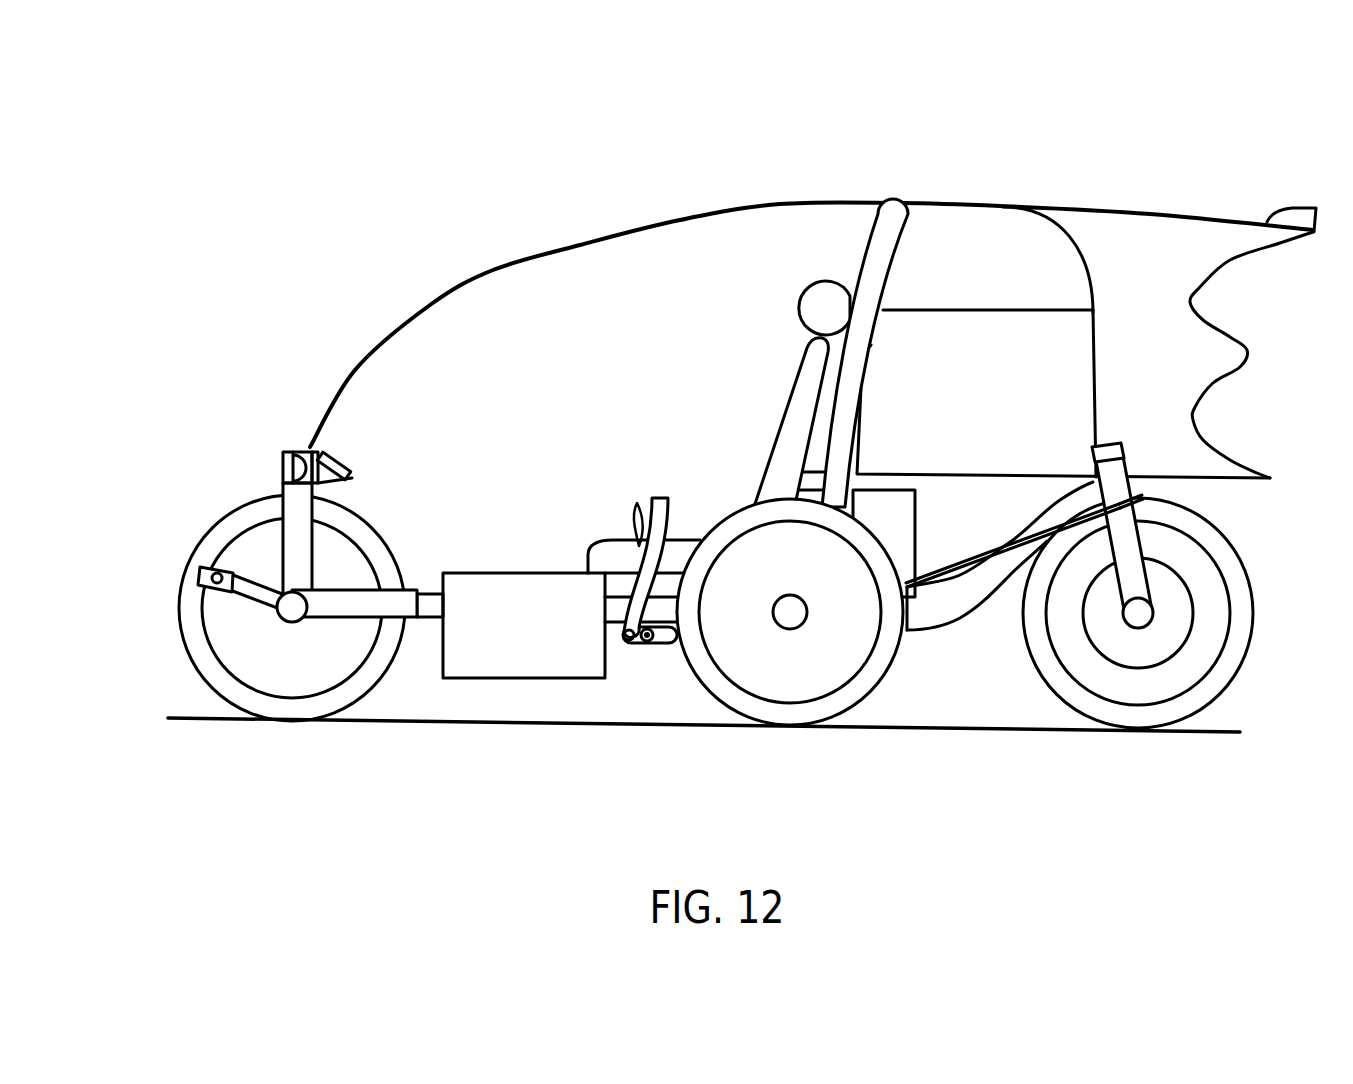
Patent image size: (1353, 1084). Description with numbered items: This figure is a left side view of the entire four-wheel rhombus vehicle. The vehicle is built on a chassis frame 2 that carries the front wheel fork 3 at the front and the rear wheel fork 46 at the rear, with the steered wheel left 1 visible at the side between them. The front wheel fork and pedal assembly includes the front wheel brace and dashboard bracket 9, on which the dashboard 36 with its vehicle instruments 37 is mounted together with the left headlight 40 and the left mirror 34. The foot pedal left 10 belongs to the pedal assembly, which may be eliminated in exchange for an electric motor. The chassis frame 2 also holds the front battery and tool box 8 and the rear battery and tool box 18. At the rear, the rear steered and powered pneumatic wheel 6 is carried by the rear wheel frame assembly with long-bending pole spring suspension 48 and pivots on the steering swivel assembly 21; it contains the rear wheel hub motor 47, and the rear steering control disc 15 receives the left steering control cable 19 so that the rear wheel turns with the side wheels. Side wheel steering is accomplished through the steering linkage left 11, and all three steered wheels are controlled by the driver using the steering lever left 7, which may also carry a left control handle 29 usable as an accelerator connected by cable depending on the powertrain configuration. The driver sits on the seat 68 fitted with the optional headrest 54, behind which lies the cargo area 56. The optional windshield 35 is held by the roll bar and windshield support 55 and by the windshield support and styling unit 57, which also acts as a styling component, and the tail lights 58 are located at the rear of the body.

The steered wheel left 1 is at (775, 720).
The chassis frame 2 is at (430, 590).
The front wheel fork 3 is at (338, 610).
The rear steered and powered pneumatic wheel 6 is at (1052, 693).
The steering lever left 7 is at (675, 492).
The front battery and tool box 8 is at (588, 680).
The front wheel brace and dashboard bracket 9 is at (270, 545).
The foot pedal left 10 is at (200, 571).
The steering linkage left 11 is at (668, 645).
The rear steering control disc 15 is at (1127, 523).
The rear battery and tool box 18 is at (897, 520).
The left steering control cable 19 is at (953, 565).
The steering swivel assembly 21 is at (1123, 455).
The left control handle 29 is at (634, 503).
The left mirror 34 is at (312, 447).
The windshield 35 is at (493, 270).
The dashboard 36 is at (318, 482).
The vehicle instruments 37 is at (340, 460).
The left headlight 40 is at (283, 460).
The rear wheel fork 46 is at (1135, 500).
The rear wheel hub motor 47 is at (1190, 623).
The rear wheel frame assembly with long-bending pole spring suspension 48 is at (978, 590).
The headrest 54 is at (813, 312).
The roll bar and windshield support 55 is at (900, 222).
The cargo area 56 is at (970, 323).
The windshield support and styling unit 57 is at (1082, 222).
The tail lights 58 is at (1295, 217).
The seat 68 is at (802, 388).